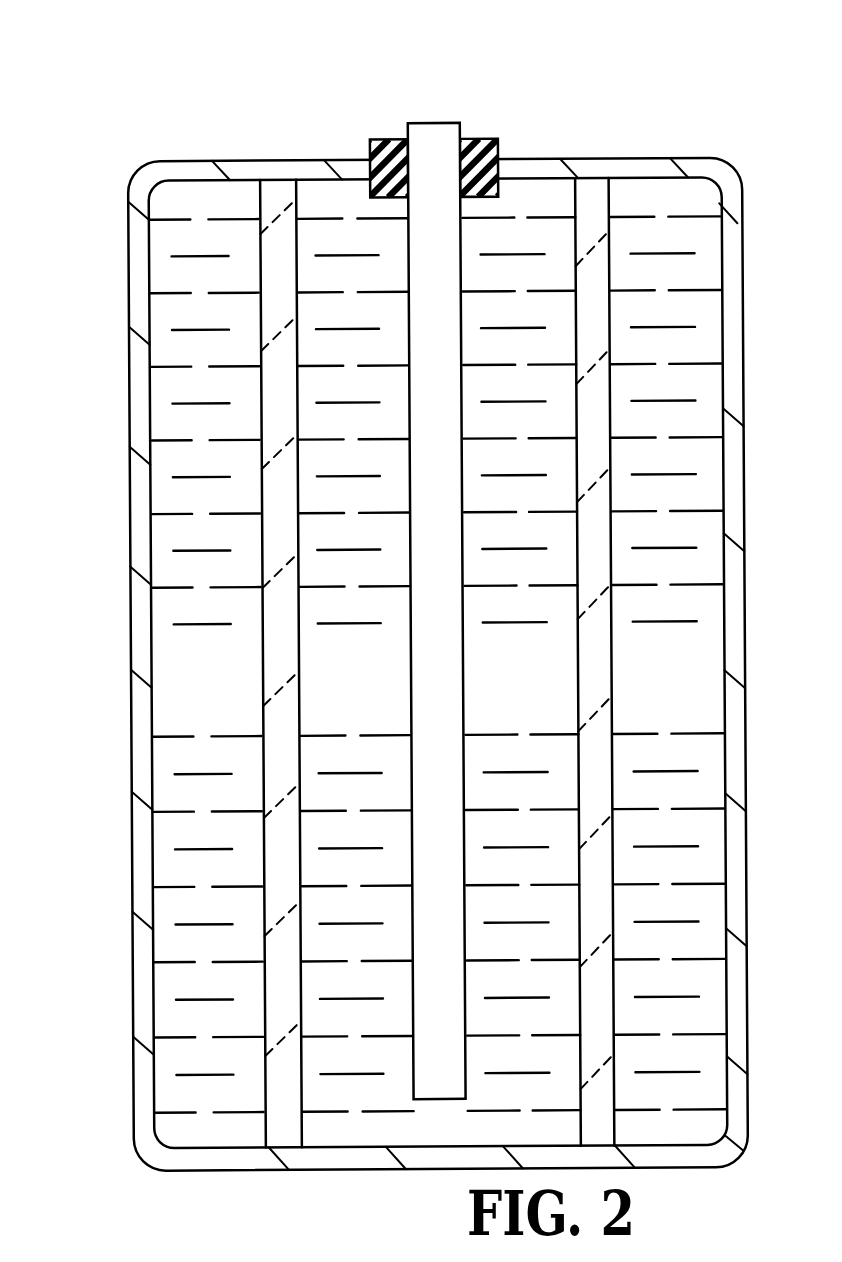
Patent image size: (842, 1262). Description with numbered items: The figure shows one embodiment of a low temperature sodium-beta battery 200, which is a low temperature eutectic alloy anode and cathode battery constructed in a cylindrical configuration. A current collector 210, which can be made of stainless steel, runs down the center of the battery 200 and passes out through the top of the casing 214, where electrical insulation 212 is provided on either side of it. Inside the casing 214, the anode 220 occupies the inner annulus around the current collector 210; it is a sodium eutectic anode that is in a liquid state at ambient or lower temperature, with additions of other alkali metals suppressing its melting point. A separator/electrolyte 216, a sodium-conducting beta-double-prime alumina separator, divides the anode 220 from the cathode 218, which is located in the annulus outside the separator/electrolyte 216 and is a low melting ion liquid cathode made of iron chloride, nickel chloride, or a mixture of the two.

The low temperature sodium-beta battery 200 is at (387, 589).
The current collector 210 is at (444, 119).
The electrical insulation 212 is at (378, 138).
The casing 214 is at (128, 280).
The separator/electrolyte 216 is at (270, 198).
The cathode 218 is at (232, 684).
The anode 220 is at (375, 684).